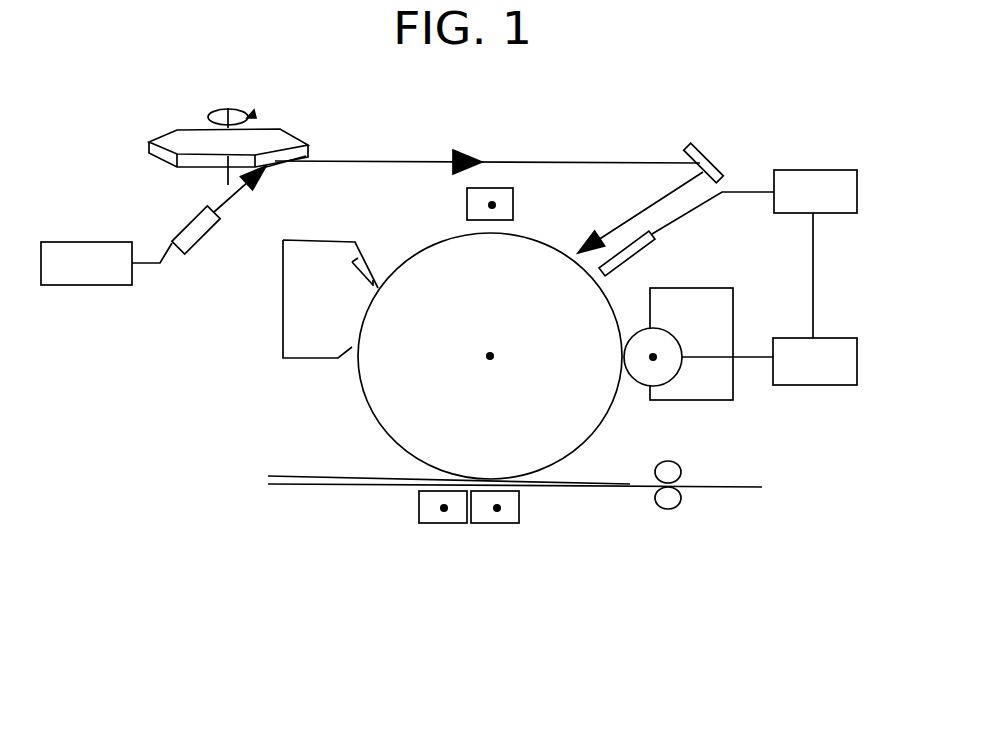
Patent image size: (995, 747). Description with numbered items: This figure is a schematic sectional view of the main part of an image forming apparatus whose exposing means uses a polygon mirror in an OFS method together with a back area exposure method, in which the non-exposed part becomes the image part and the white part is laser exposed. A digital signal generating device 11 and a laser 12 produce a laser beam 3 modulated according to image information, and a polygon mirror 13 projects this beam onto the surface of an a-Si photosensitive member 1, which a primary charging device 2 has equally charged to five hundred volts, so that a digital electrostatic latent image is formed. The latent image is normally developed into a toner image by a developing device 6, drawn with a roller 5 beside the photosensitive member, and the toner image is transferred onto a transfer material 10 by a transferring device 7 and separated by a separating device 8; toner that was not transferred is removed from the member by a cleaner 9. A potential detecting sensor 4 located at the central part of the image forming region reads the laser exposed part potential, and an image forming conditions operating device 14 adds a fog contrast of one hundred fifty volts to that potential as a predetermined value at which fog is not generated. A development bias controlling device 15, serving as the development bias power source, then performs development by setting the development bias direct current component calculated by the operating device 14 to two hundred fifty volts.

The photosensitive member 1 is at (387, 408).
The primary charging device 2 is at (467, 210).
The laser beam 3 is at (628, 218).
The potential detecting sensor 4 is at (652, 238).
The transfer roller 5 is at (633, 386).
The developing device 6 is at (710, 400).
The transferring device 7 is at (495, 523).
The separating device 8 is at (432, 523).
The cleaner 9 is at (280, 322).
The transfer material 10 is at (297, 482).
The digital signal generating device 11 is at (83, 241).
The laser 12 is at (202, 237).
The polygon mirror 13 is at (195, 134).
The image forming conditions operating device 14 is at (860, 188).
The development bias controlling device 15 is at (858, 372).